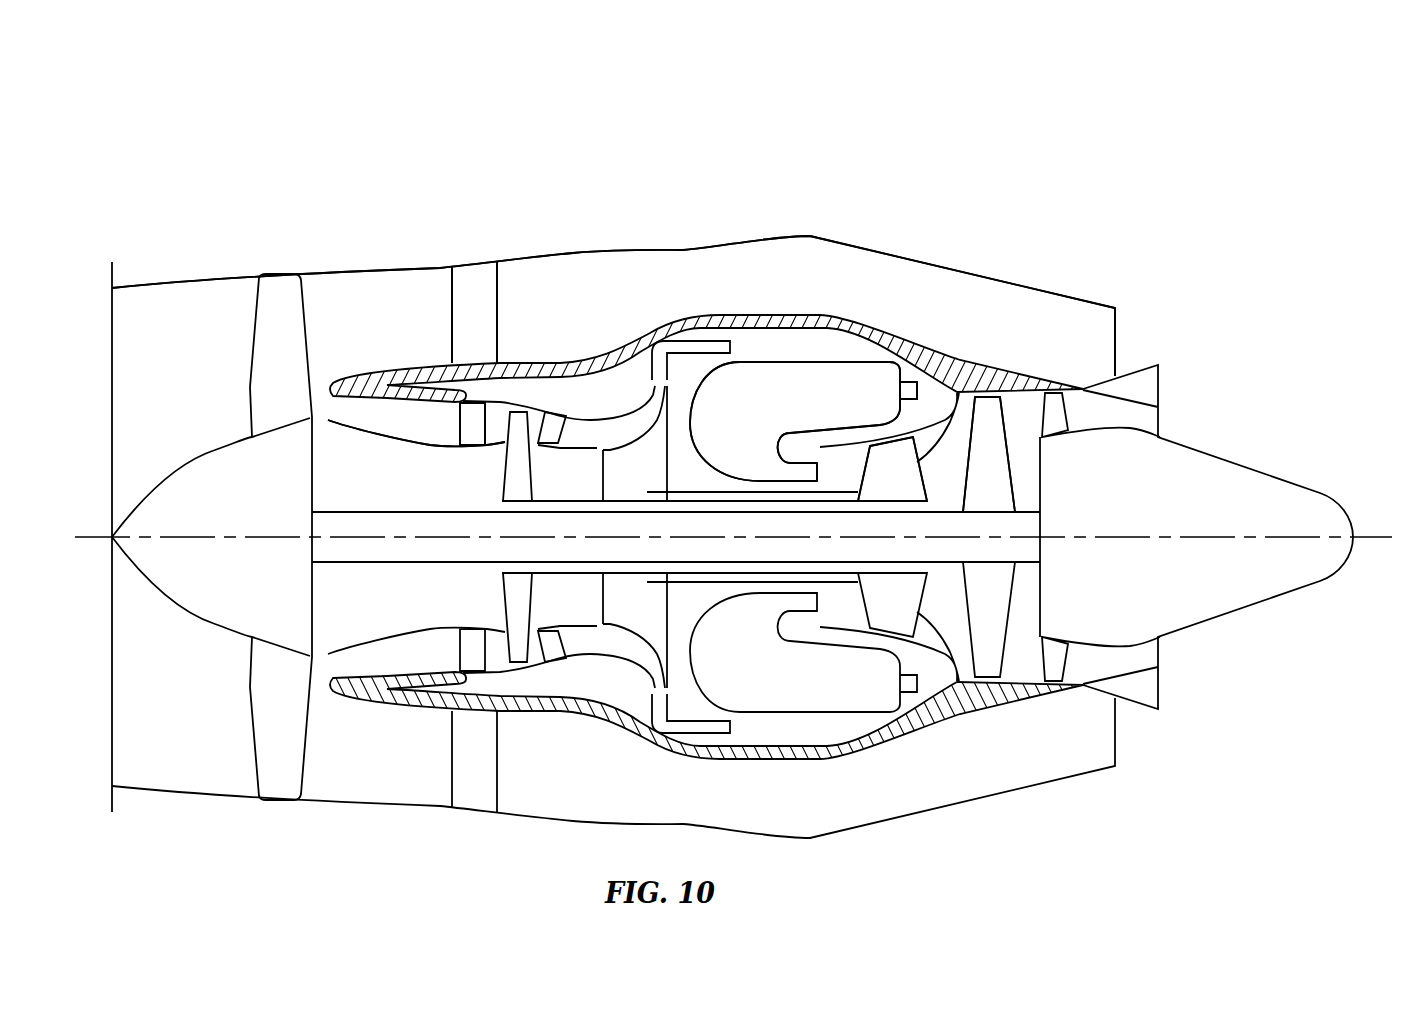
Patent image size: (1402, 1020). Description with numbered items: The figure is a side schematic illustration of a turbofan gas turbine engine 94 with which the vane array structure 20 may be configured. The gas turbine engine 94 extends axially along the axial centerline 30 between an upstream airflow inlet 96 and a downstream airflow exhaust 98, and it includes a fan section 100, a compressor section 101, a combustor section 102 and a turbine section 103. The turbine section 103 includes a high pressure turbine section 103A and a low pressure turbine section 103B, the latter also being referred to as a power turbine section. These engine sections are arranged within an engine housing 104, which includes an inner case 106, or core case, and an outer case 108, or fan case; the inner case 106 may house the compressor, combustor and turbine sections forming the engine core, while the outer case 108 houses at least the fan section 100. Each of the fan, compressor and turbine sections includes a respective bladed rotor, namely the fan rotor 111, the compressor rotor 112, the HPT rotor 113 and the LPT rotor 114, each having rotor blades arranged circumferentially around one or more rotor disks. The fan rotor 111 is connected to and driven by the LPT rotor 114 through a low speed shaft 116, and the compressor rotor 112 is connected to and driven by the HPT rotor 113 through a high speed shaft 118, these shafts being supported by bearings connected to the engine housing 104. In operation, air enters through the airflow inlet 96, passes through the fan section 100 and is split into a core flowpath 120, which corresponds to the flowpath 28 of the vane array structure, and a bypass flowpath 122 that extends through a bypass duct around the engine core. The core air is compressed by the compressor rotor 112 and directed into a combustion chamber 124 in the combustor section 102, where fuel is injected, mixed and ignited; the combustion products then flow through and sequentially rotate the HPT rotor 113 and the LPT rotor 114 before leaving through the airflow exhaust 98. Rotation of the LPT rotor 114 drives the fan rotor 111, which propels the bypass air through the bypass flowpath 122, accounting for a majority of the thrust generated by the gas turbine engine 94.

The turbofan gas turbine engine 94 is at (182, 183).
The upstream airflow inlet 96 is at (112, 378).
The downstream airflow exhaust 98 is at (1160, 418).
The axial centerline 30 is at (87, 532).
The fan section 100 is at (242, 294).
The engine housing 104 is at (623, 238).
The outer case 108 is at (734, 244).
The inner case 106 is at (662, 315).
The compressor section 101 is at (556, 383).
The bypass flowpath 122 is at (637, 299).
The combustor section 102 is at (828, 358).
The combustion chamber 124 is at (808, 407).
The turbine section 103 is at (1057, 280).
The high pressure turbine section 103A is at (927, 437).
The low pressure turbine section 103B is at (1000, 389).
The vane array structure 20 is at (572, 438).
The flowpath 28 is at (447, 433).
The core flowpath 120 is at (447, 433).
The low speed shaft 116 is at (370, 512).
The compressor rotor 112 is at (600, 465).
The high speed shaft 118 is at (712, 501).
The HPT rotor 113 is at (922, 480).
The LPT rotor 114 is at (1015, 472).
The fan rotor 111 is at (235, 635).